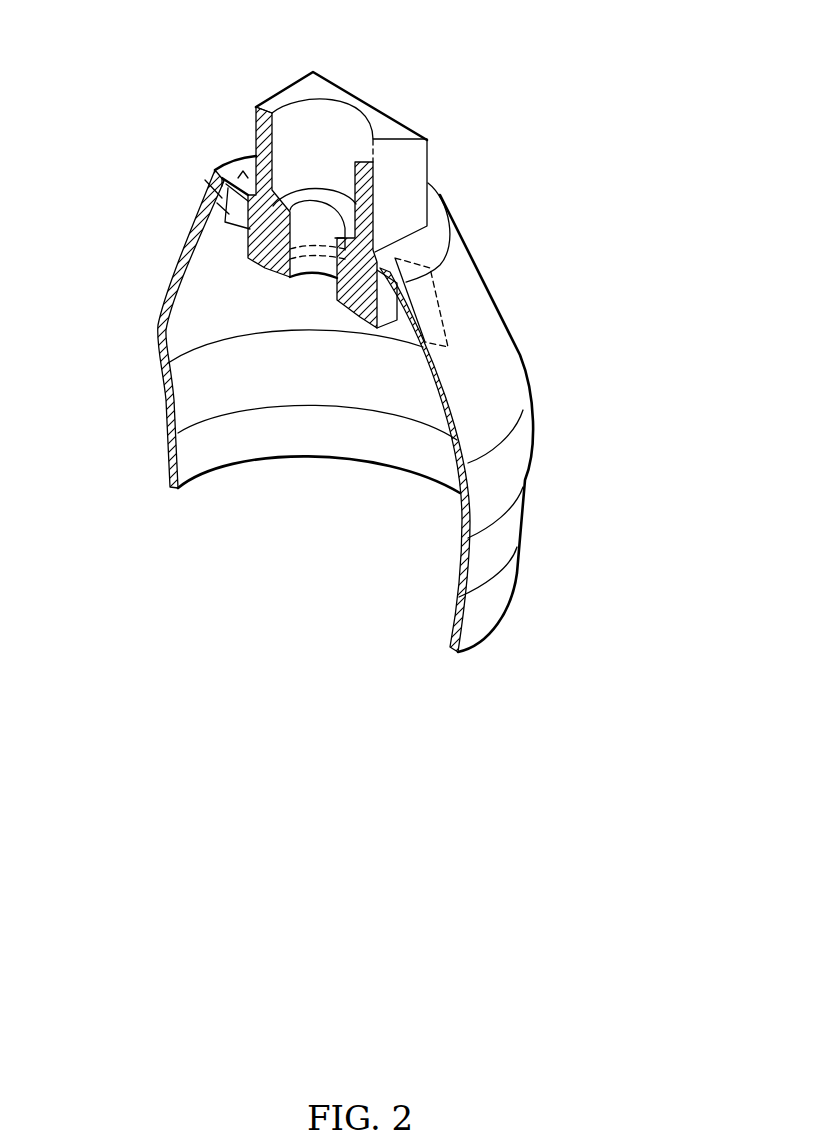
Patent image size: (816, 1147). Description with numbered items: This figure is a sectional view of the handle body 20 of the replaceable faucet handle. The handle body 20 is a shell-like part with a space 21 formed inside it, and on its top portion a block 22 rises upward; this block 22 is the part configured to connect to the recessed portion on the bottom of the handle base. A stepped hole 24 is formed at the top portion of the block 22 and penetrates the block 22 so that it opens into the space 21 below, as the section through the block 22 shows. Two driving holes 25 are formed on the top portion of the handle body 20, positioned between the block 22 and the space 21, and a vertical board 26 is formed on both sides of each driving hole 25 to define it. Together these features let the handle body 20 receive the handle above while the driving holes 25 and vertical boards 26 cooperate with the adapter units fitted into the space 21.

The handle body 20 is at (359, 354).
The space 21 is at (183, 407).
The block 22 is at (280, 97).
The stepped hole 24 is at (340, 133).
The driving holes 25 is at (217, 173).
The vertical board 26 is at (442, 297).